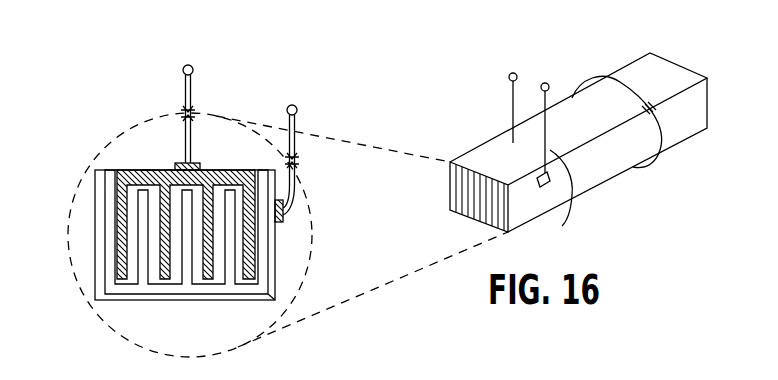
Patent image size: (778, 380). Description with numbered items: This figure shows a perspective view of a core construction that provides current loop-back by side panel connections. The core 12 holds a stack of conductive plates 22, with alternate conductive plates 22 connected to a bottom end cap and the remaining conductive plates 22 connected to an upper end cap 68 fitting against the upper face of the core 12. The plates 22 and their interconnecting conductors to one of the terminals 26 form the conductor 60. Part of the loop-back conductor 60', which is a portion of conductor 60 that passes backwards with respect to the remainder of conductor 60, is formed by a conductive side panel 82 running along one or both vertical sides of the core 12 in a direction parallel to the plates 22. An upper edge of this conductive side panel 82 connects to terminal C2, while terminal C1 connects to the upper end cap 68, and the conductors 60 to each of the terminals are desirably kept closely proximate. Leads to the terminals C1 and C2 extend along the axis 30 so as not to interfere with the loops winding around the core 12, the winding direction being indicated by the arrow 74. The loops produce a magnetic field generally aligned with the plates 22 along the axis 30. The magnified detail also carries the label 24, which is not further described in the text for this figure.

The core 12 is at (668, 34).
The conductive plates 22 is at (125, 283).
The dielectric layer 24 is at (274, 300).
The terminals 26 is at (286, 110).
The axis 30 is at (415, 232).
The conductor 60 is at (302, 230).
The loop-back conductor 60' is at (582, 195).
The upper end cap 68 is at (145, 168).
The arrow 74 is at (601, 78).
The conductive side panel 82 is at (272, 237).
The terminal C1 is at (192, 100).
The terminal C2 is at (423, 131).